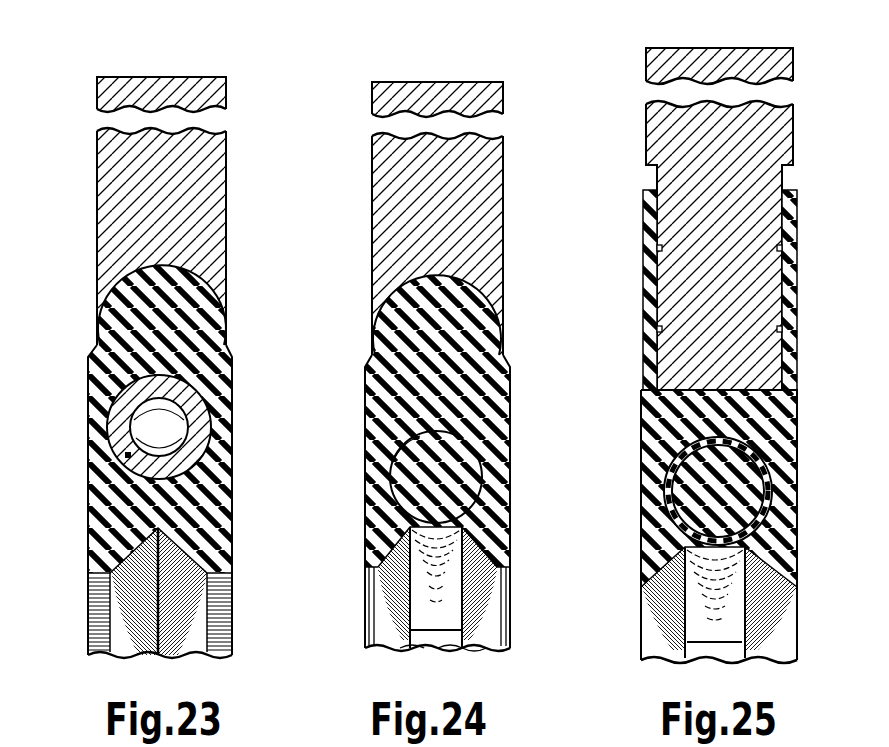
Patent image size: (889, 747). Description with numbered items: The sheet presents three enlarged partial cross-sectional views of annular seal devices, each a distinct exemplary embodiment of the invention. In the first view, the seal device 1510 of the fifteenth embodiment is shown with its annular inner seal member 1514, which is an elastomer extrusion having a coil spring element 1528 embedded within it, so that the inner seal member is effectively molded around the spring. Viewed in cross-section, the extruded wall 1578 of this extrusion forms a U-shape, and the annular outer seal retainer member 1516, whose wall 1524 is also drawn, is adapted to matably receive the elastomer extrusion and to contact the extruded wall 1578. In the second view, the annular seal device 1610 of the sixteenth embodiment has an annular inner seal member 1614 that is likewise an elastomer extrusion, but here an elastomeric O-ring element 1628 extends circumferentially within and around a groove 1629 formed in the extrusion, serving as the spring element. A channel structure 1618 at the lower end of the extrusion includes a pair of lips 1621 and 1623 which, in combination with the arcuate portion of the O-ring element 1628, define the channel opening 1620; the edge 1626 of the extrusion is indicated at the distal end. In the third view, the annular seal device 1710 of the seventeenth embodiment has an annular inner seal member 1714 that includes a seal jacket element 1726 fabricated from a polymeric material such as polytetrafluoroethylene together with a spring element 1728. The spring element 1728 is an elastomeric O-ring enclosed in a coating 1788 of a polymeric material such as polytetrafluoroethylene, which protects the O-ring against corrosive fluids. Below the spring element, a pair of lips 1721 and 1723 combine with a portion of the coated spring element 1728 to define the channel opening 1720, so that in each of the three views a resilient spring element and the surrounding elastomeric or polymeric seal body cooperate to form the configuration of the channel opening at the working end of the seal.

In FIG. 23, the tip assembly 1510 is at (184, 68).
In FIG. 23, the annular outer seal retainer member 1516 is at (97, 186).
In FIG. 23, the shaft outer wall 1524 is at (226, 256).
In FIG. 23, the extruded wall 1578 is at (228, 350).
In FIG. 23, the coil spring element 1528 is at (202, 422).
In FIG. 23, the annular inner seal member 1514 is at (236, 518).
In FIG. 24, the annular seal device 1610 is at (462, 72).
In FIG. 24, the annular inner seal member 1614 is at (516, 391).
In FIG. 24, the O-ring element 1628 is at (455, 482).
In FIG. 24, the groove 1629 is at (397, 473).
In FIG. 24, the lip 1621 is at (382, 614).
In FIG. 24, the lip 1623 is at (485, 607).
In FIG. 24, the channel opening 1620 is at (436, 587).
In FIG. 24, the distal edge 1626 is at (425, 642).
In FIG. 24, the channel structure 1618 is at (473, 642).
In FIG. 25, the annular seal device 1710 is at (752, 44).
In FIG. 25, the annular inner seal member 1714 is at (632, 414).
In FIG. 25, the coating 1788 is at (666, 480).
In FIG. 25, the spring element 1728 is at (780, 459).
In FIG. 25, the seal jacket element 1726 is at (640, 552).
In FIG. 25, the lip 1721 is at (650, 646).
In FIG. 25, the lip 1723 is at (781, 622).
In FIG. 25, the channel opening 1720 is at (715, 602).